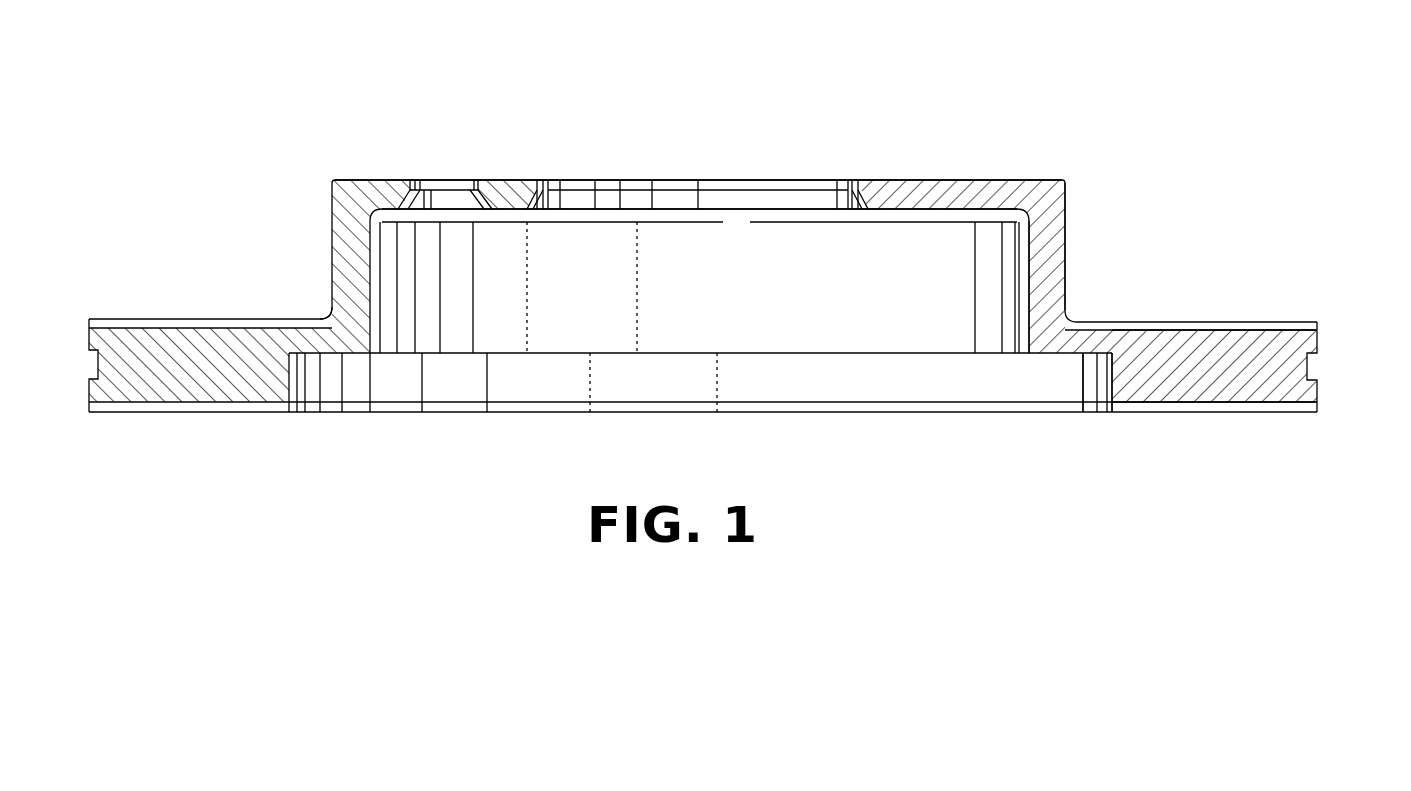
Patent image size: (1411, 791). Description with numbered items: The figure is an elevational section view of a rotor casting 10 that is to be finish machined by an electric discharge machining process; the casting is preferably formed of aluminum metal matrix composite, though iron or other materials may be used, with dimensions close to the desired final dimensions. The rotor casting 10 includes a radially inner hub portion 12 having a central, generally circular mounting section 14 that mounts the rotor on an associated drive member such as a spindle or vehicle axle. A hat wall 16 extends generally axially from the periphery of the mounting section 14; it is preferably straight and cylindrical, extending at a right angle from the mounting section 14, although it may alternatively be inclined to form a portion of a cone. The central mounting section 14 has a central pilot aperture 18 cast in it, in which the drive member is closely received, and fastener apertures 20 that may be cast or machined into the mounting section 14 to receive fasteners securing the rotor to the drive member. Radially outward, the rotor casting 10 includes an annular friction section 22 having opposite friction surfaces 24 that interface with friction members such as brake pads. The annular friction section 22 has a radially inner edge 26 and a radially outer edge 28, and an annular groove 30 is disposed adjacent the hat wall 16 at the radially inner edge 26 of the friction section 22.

The rotor casting 10 is at (902, 105).
The radially inner hub portion 12 is at (378, 153).
The central mounting section 14 is at (983, 180).
The hat wall 16 is at (1065, 228).
The central pilot aperture 18 is at (548, 181).
The fastener apertures 20 is at (478, 187).
The annular friction section 22 is at (165, 277).
The friction surfaces 24 is at (1190, 320).
The radially inner edge 26 is at (1082, 323).
The radially outer edge 28 is at (1318, 322).
The annular groove 30 is at (318, 323).